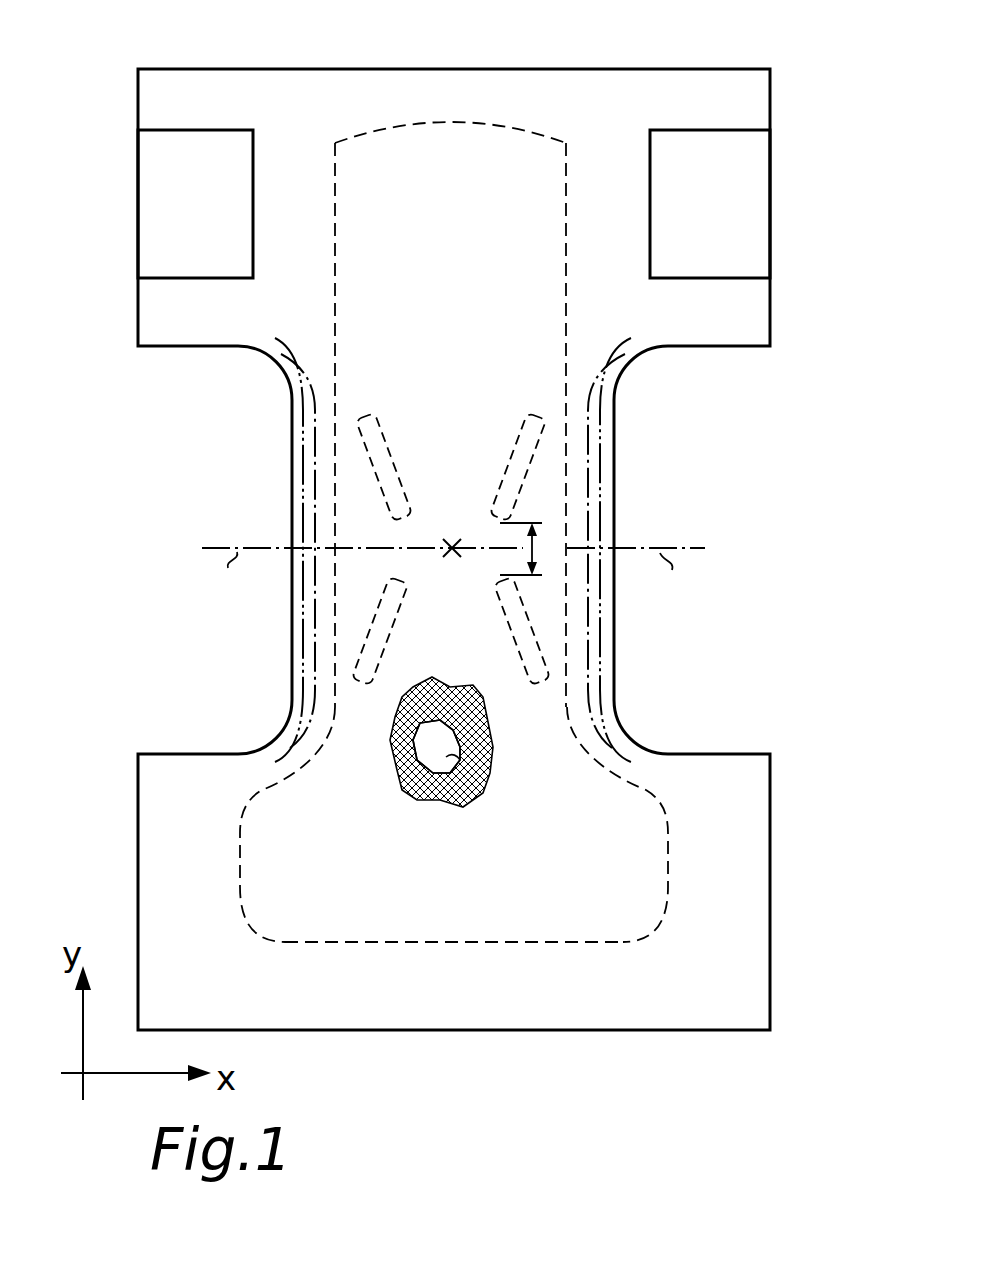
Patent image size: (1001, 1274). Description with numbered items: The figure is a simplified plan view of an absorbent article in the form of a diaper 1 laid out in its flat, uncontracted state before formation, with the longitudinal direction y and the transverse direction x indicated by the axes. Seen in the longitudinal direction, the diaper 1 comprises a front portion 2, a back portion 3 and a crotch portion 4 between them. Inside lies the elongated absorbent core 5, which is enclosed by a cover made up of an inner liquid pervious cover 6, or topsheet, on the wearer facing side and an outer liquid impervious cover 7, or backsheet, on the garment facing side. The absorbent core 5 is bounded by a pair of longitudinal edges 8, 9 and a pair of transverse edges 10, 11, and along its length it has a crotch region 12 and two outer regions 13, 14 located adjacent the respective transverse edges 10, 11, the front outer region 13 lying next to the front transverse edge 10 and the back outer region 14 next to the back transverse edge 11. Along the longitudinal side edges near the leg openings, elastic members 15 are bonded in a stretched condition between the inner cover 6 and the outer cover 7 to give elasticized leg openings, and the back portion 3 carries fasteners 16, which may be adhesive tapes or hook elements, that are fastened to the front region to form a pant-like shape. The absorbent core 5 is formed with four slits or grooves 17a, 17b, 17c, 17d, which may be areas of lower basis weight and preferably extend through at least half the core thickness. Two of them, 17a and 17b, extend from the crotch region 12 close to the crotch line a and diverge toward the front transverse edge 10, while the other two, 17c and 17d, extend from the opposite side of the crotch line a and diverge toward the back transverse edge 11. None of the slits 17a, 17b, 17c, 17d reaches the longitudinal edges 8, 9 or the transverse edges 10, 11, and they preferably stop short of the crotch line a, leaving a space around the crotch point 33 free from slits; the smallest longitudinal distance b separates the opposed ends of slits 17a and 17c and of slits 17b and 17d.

The diaper 1 is at (828, 71).
The front portion 2 is at (503, 992).
The back portion 3 is at (515, 90).
The crotch portion 4 is at (614, 645).
The absorbent core 5 is at (410, 795).
The inner liquid pervious cover 6 is at (421, 879).
The outer liquid impervious cover 7 is at (488, 782).
The longitudinal edge 8 is at (567, 242).
The longitudinal edge 9 is at (335, 222).
The transverse edge 10 is at (357, 942).
The transverse edge 11 is at (422, 121).
The crotch region 12 is at (441, 509).
The front outer region 13 is at (539, 861).
The back outer region 14 is at (469, 359).
The elastic members 15 is at (304, 432).
The fasteners 16 is at (181, 208).
The slit or groove 17a is at (385, 619).
The slit or groove 17b is at (513, 630).
The slit or groove 17c is at (377, 428).
The slit or groove 17d is at (520, 452).
The crotch point 33 is at (452, 545).